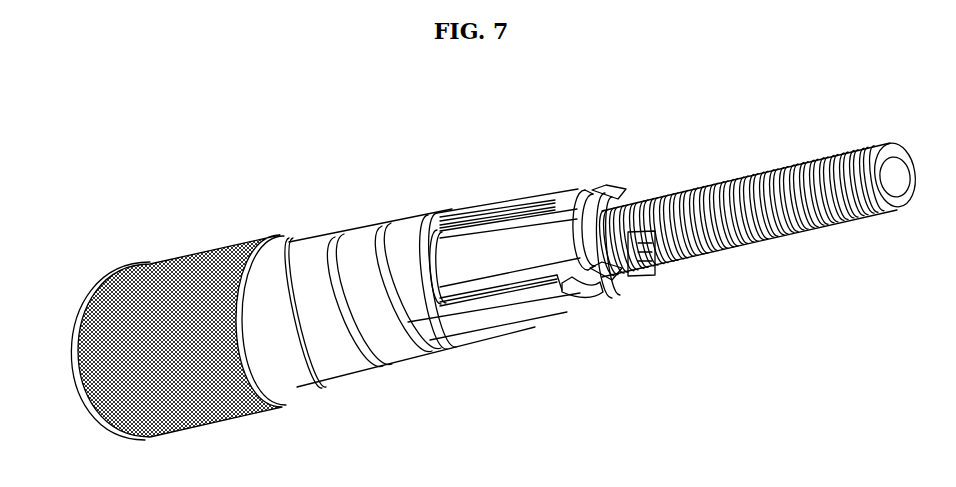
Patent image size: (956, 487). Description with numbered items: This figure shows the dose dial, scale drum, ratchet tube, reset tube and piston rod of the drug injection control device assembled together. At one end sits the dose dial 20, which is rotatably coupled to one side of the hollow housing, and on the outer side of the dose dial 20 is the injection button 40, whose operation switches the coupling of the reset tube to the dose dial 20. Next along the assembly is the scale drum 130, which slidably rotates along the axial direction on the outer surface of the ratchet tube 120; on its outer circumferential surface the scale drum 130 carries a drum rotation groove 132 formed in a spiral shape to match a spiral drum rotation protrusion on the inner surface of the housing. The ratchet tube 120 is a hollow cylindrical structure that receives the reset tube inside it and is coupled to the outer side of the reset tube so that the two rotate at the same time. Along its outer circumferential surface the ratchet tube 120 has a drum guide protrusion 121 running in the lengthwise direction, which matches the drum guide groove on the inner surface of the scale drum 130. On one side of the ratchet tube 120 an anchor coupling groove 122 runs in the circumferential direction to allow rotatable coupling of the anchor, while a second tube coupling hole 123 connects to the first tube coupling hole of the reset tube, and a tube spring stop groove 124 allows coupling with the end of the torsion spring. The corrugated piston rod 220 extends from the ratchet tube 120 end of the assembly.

The dose dial 20 is at (172, 259).
The injection button 40 is at (72, 356).
The scale drum 130 is at (312, 243).
The drum rotation groove 132 is at (380, 228).
The ratchet tube 120 is at (500, 228).
The drum guide protrusion 121 is at (546, 203).
The anchor coupling groove 122 is at (607, 190).
The second tube coupling hole 123 is at (607, 296).
The tube spring stop groove 124 is at (569, 303).
The corrugated tube 220 is at (810, 228).